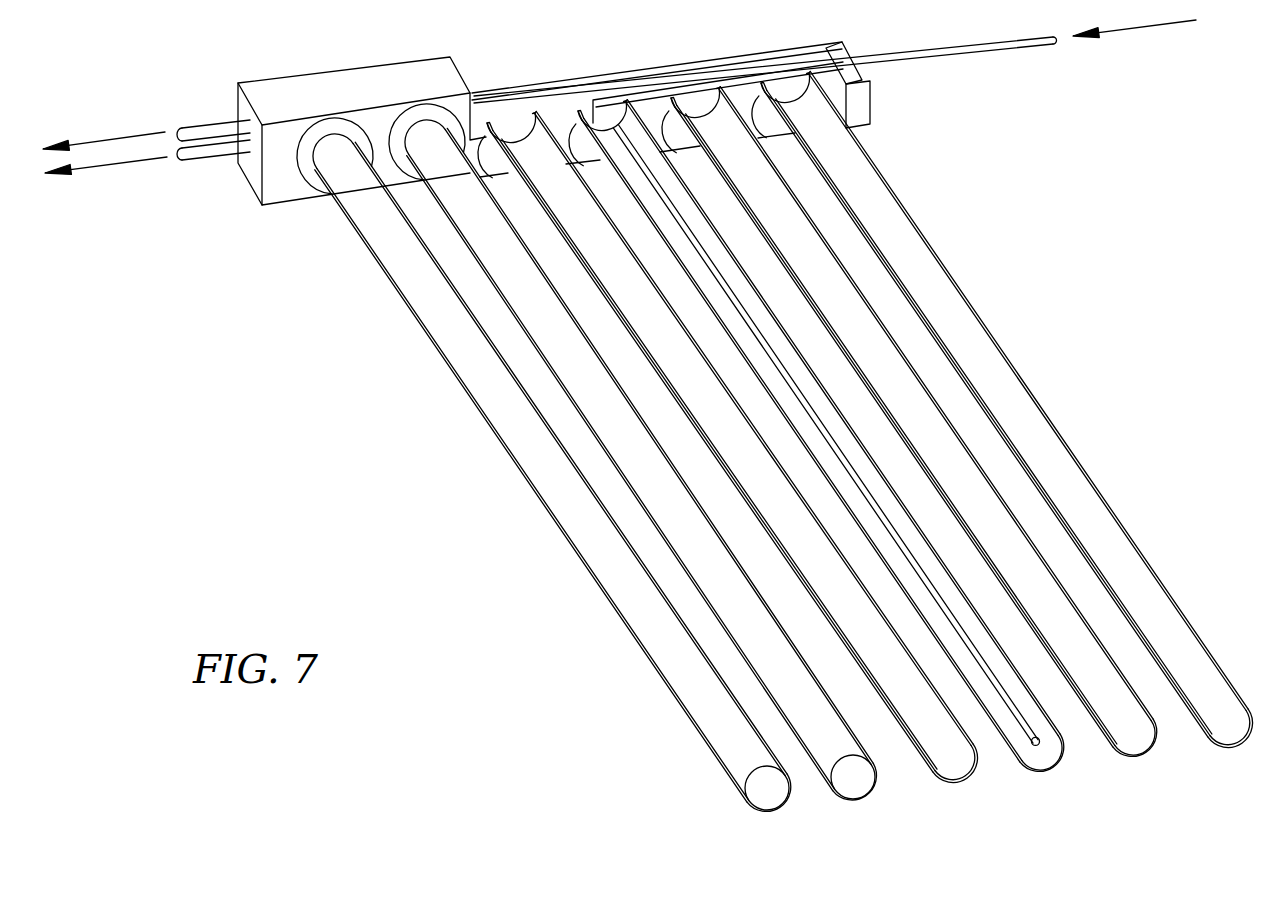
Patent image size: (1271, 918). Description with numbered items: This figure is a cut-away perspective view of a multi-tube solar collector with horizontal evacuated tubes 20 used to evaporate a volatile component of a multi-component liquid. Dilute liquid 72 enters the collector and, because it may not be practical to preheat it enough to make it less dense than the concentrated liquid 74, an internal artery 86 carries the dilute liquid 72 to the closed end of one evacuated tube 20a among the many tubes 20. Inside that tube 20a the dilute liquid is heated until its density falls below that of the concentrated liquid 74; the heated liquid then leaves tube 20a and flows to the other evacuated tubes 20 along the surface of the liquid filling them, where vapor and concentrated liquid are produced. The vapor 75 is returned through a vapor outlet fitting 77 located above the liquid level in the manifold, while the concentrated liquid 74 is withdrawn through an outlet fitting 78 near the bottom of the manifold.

The evacuated tube 20 is at (675, 703).
The evacuated tube 20a is at (1020, 758).
The dilute liquid 72 is at (1138, 30).
The concentrated liquid 74 is at (115, 163).
The vapor 75 is at (122, 136).
The vapor outlet fitting 77 is at (205, 125).
The outlet fitting 78 is at (205, 163).
The internal artery 86 is at (947, 58).